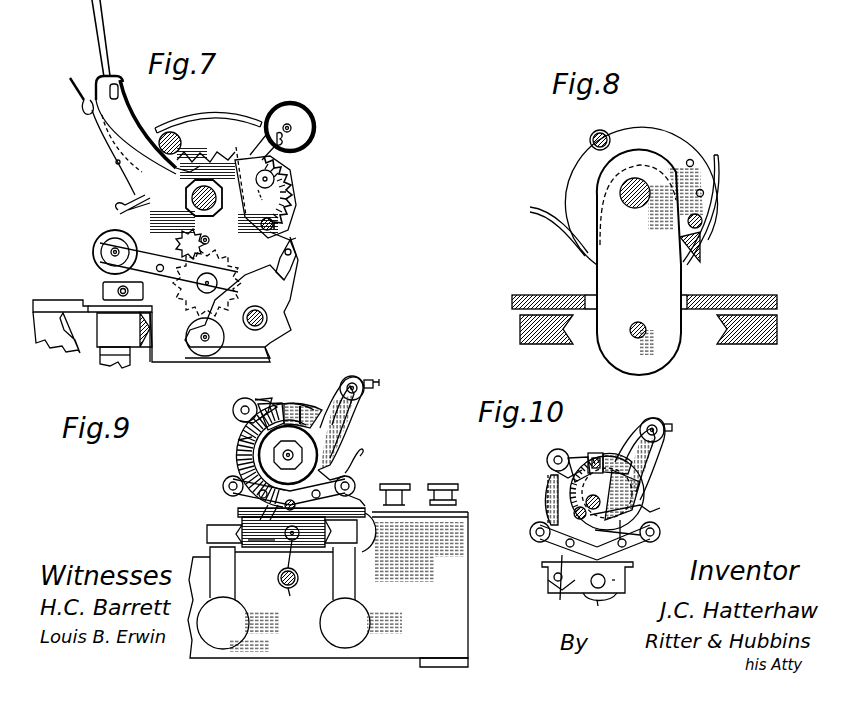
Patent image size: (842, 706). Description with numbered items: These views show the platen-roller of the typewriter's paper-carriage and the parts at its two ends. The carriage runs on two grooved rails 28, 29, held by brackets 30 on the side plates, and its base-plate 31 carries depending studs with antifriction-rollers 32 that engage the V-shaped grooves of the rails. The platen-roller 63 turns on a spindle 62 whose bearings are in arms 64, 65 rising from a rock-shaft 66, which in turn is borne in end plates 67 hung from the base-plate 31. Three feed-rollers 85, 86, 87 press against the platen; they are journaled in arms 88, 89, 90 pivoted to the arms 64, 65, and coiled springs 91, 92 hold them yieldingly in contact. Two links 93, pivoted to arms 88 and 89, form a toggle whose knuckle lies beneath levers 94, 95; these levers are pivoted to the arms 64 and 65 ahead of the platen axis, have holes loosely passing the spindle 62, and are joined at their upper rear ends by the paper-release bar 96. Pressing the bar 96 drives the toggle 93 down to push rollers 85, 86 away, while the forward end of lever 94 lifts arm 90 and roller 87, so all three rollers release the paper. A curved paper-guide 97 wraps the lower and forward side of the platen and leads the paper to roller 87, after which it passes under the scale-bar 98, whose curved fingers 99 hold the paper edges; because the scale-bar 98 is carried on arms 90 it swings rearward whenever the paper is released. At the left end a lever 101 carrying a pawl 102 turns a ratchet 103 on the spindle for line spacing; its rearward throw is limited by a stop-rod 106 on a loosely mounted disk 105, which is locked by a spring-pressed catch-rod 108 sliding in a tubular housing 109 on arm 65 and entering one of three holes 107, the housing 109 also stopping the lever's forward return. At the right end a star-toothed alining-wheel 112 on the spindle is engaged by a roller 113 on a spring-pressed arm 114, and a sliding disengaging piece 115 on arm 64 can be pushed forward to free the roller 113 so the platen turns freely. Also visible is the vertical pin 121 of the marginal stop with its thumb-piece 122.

In FIG. 8, the grooved rail 28 is at (750, 345).
In FIG. 9, the grooved rail 28 is at (360, 546).
In FIG. 7, the grooved rail 29 is at (151, 334).
In FIG. 8, the grooved rail 29 is at (530, 345).
In FIG. 9, the grooved rail 29 is at (212, 525).
In FIG. 9, the bracket 30 is at (236, 593).
In FIG. 8, the base-plate 31 is at (540, 300).
In FIG. 9, the base-plate 31 is at (353, 512).
In FIG. 7, the antifriction-roller 32 is at (147, 350).
In FIG. 9, the antifriction-roller 32 is at (242, 530).
In FIG. 7, the platen-roller spindle 62 is at (188, 196).
In FIG. 8, the platen-roller spindle 62 is at (633, 205).
In FIG. 9, the platen-roller spindle 62 is at (258, 440).
In FIG. 10, the platen-roller spindle 62 is at (607, 493).
In FIG. 9, the platen-roller 63 is at (240, 462).
In FIG. 10, the platen-roller 63 is at (643, 503).
In FIG. 9, the platen-supporting arm 64 is at (292, 602).
In FIG. 10, the platen-supporting arm 64 is at (598, 600).
In FIG. 7, the platen-supporting arm 65 is at (165, 289).
In FIG. 8, the platen-supporting arm 65 is at (639, 262).
In FIG. 8, the rock-shaft 66 is at (646, 316).
In FIG. 9, the rock-shaft 66 is at (293, 556).
In FIG. 10, the rock-shaft 66 is at (604, 592).
In FIG. 9, the end plate 67 is at (286, 540).
In FIG. 10, the end plate 67 is at (627, 581).
In FIG. 7, the feed-roller 85 is at (100, 238).
In FIG. 9, the feed-roller 85 is at (353, 481).
In FIG. 10, the feed-roller 85 is at (662, 529).
In FIG. 9, the feed-roller 86 is at (230, 476).
In FIG. 10, the feed-roller 86 is at (531, 531).
In FIG. 7, the feed-roller 87 is at (313, 126).
In FIG. 9, the feed-roller 87 is at (236, 402).
In FIG. 10, the feed-roller 87 is at (556, 452).
In FIG. 7, the feed-roller arm 88 is at (104, 282).
In FIG. 9, the feed-roller arm 88 is at (348, 492).
In FIG. 10, the feed-roller arm 88 is at (633, 542).
In FIG. 7, the feed-roller arm 89 is at (293, 265).
In FIG. 9, the feed-roller arm 89 is at (234, 497).
In FIG. 10, the feed-roller arm 89 is at (550, 537).
In FIG. 7, the feed-roller arm 90 is at (293, 116).
In FIG. 9, the feed-roller arm 90 is at (275, 415).
In FIG. 10, the feed-roller arm 90 is at (578, 460).
In FIG. 7, the coiled spring 91 is at (130, 208).
In FIG. 9, the coiled spring 91 is at (360, 455).
In FIG. 7, the coiled spring 92 is at (291, 195).
In FIG. 9, the coiled spring 92 is at (250, 447).
In FIG. 7, the toggle link 93 is at (195, 243).
In FIG. 9, the toggle link 93 is at (261, 533).
In FIG. 10, the toggle link 93 is at (634, 520).
In FIG. 9, the paper-release lever 94 is at (352, 415).
In FIG. 10, the paper-release lever 94 is at (660, 460).
In FIG. 7, the paper-release lever 95 is at (135, 116).
In FIG. 7, the paper-release bar 96 is at (118, 78).
In FIG. 9, the paper-release bar 96 is at (358, 380).
In FIG. 10, the paper-release bar 96 is at (663, 426).
In FIG. 8, the paper-guide 97 is at (722, 194).
In FIG. 9, the scale-bar 98 is at (267, 407).
In FIG. 7, the curved finger 99 is at (226, 126).
In FIG. 9, the curved finger 99 is at (312, 408).
In FIG. 10, the curved finger 99 is at (610, 456).
In FIG. 7, the line-spacing lever 101 is at (110, 120).
In FIG. 7, the pawl 102 is at (232, 166).
In FIG. 7, the ratchet 103 is at (188, 160).
In FIG. 8, the circular disk 105 is at (680, 140).
In FIG. 7, the stop-rod 106 is at (172, 132).
In FIG. 8, the stop-rod 106 is at (592, 134).
In FIG. 8, the hole 107 is at (694, 160).
In FIG. 7, the catch-rod 108 is at (276, 225).
In FIG. 8, the catch-rod 108 is at (703, 221).
In FIG. 7, the tubular housing 109 is at (292, 238).
In FIG. 8, the tubular housing 109 is at (705, 240).
In FIG. 10, the alining-wheel 112 is at (549, 475).
In FIG. 10, the alining roller 113 is at (553, 493).
In FIG. 10, the spring-pressed arm 114 is at (573, 513).
In FIG. 10, the sliding disengaging piece 115 is at (597, 453).
In FIG. 9, the vertical pin 121 is at (441, 488).
In FIG. 9, the thumb-piece 122 is at (400, 490).